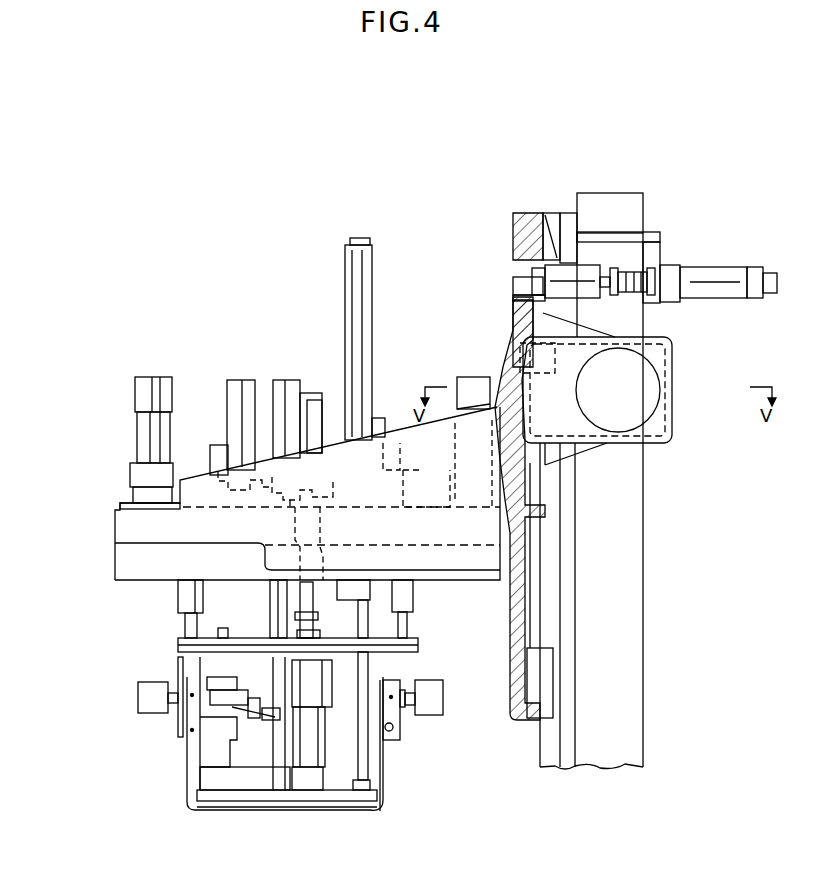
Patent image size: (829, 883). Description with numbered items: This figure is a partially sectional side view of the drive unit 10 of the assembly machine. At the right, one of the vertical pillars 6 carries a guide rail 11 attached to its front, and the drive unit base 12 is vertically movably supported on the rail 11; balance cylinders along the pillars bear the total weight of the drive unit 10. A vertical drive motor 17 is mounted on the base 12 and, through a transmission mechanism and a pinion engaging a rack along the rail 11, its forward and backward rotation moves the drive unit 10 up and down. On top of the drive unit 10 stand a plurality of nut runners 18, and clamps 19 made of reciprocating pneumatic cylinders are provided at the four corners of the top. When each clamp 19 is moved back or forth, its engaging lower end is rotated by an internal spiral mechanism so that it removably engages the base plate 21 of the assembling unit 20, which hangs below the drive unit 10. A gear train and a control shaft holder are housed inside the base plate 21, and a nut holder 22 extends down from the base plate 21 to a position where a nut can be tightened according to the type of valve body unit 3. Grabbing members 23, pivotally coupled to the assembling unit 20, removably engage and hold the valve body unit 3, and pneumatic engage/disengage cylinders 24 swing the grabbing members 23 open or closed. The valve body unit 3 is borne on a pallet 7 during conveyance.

The valve body unit 3 is at (245, 780).
The pillars 6 is at (623, 745).
The pallet 7 is at (286, 795).
The drive unit 10 is at (187, 375).
The guide rails 11 is at (547, 753).
The drive unit base 12 is at (473, 577).
The vertical drive motor 17 is at (645, 398).
The nut runners 18 is at (357, 367).
The clamps 19 is at (152, 391).
The assembling unit 20 is at (137, 633).
The base plate 21 is at (140, 565).
The nut holder 22 is at (360, 787).
The grabbing members 23 is at (197, 768).
The engage/disengage cylinders 24 is at (148, 705).